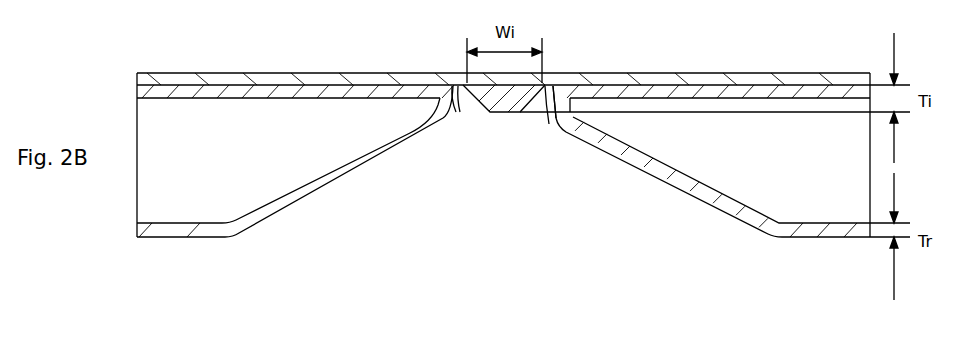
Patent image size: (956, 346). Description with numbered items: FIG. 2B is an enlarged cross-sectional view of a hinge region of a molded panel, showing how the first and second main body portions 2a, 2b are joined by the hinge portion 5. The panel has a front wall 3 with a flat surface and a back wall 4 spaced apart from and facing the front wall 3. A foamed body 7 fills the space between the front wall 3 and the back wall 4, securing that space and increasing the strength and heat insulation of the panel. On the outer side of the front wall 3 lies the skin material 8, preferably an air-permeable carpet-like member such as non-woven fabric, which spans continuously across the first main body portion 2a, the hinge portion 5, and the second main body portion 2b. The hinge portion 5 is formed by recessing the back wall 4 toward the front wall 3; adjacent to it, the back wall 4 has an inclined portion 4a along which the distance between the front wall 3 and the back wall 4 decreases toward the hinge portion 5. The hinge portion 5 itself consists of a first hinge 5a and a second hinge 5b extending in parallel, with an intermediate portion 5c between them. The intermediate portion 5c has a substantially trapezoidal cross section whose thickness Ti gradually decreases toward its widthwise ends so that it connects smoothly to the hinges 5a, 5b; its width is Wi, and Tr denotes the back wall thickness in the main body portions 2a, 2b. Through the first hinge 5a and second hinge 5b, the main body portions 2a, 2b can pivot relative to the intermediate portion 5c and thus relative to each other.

The first main body portion 2a is at (252, 284).
The second main body portion 2b is at (719, 284).
The front wall 3 is at (263, 92).
The back wall 4 is at (195, 230).
The inclined portion 4a is at (349, 176).
The hinge portion 5 is at (506, 184).
The first hinge 5a is at (460, 112).
The second hinge 5b is at (549, 124).
The intermediate portion 5c is at (502, 103).
The foamed body 7 is at (216, 160).
The skin material 8 is at (594, 80).